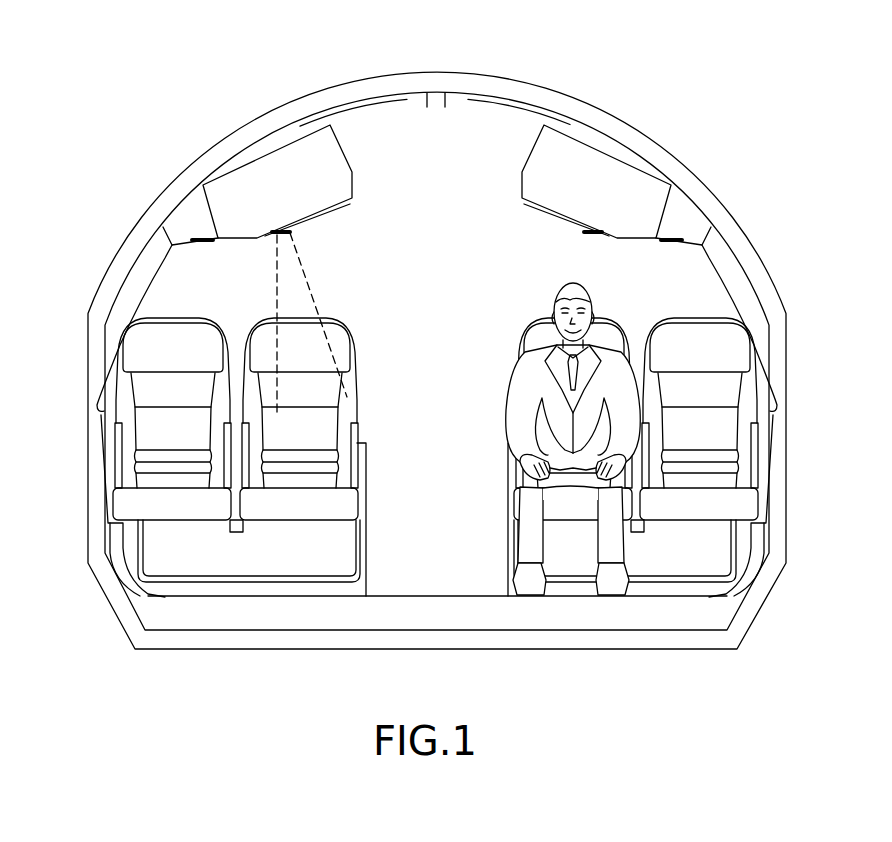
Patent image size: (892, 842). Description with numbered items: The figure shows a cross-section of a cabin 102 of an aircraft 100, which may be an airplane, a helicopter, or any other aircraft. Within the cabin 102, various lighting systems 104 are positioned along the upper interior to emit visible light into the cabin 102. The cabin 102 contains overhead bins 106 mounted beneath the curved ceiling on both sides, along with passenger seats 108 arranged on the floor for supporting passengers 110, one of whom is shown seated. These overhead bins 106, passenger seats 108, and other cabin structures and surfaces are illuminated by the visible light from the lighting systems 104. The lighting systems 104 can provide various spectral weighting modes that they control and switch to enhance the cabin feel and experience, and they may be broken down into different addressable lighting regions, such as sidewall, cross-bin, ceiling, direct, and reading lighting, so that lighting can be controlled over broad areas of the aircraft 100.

The aircraft 100 is at (112, 110).
The cabin 102 is at (441, 498).
The lighting systems 104 is at (427, 107).
The overhead bins 106 is at (232, 213).
The passenger seats 108 is at (323, 393).
The passengers 110 is at (640, 303).